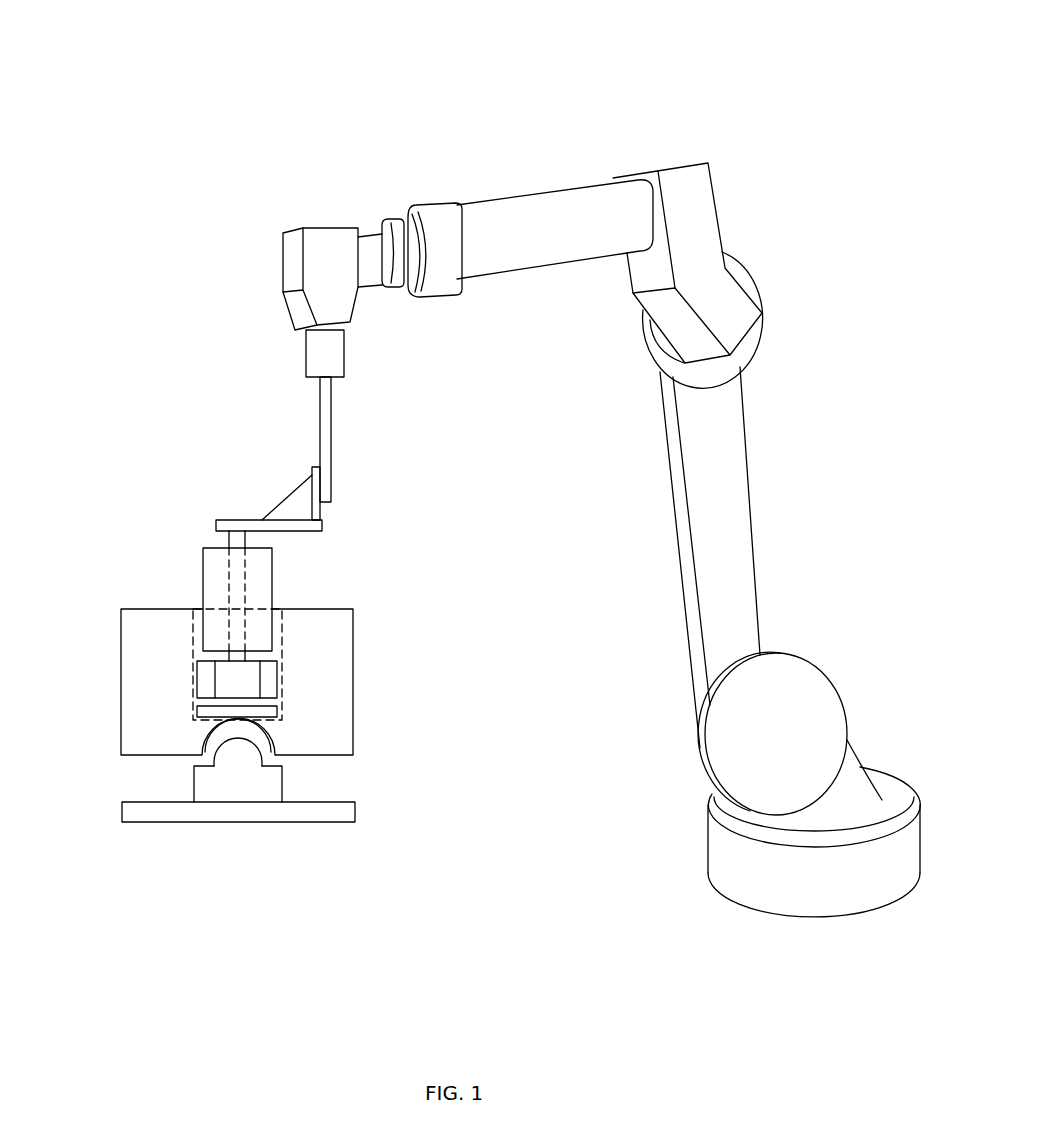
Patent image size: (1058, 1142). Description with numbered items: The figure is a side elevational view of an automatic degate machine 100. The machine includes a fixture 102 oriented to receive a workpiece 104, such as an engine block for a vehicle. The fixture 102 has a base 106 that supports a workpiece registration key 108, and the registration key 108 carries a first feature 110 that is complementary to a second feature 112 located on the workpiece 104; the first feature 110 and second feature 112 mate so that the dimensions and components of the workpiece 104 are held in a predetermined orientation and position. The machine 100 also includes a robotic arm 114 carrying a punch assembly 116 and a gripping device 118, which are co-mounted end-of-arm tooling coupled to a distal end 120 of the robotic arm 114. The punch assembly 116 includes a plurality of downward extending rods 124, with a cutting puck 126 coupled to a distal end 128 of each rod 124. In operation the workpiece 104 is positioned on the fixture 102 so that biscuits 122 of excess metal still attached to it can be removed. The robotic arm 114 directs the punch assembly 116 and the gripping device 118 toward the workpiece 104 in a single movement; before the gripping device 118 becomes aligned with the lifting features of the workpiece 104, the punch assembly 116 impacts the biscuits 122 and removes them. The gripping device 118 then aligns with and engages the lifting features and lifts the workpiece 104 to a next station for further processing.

The automatic degate machine 100 is at (703, 48).
The fixture 102 is at (122, 788).
The workpiece 104 is at (333, 668).
The base 106 is at (340, 812).
The workpiece registration key 108 is at (270, 785).
The first feature 110 is at (215, 758).
The second feature 112 is at (270, 746).
The robotic arm 114 is at (556, 207).
The punch assembly 116 is at (353, 435).
The gripping device 118 is at (213, 570).
The distal end 120 is at (317, 354).
The biscuits 122 is at (205, 713).
The downward extending rods 124 is at (256, 577).
The cutting puck 126 is at (267, 678).
The distal end 128 is at (240, 637).